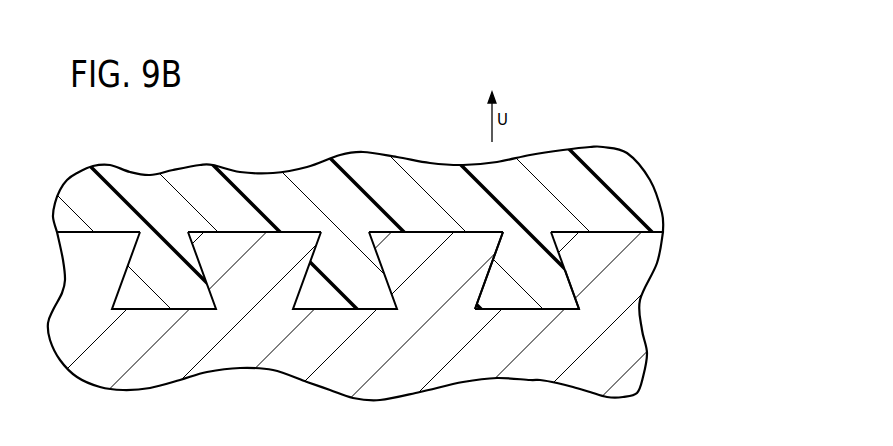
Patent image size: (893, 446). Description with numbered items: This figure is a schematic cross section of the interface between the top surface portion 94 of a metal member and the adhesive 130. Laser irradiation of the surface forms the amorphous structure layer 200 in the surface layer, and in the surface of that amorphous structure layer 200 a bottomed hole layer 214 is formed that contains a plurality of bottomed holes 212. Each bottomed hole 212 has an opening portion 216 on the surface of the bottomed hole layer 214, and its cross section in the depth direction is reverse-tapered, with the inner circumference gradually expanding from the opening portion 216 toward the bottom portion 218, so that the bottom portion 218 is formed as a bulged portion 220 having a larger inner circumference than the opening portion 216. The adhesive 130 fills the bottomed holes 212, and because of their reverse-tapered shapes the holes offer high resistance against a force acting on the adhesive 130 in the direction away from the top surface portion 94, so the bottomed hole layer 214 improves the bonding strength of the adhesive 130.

The adhesive 130 is at (615, 170).
The top surface portion 94 is at (402, 315).
The amorphous structure layer 200 is at (628, 353).
The bottomed hole layer 214 is at (673, 232).
The bottomed hole 212 is at (563, 253).
The opening portion 216 is at (551, 232).
The bottom portion 218 is at (510, 308).
The bulged portion 220 is at (583, 310).